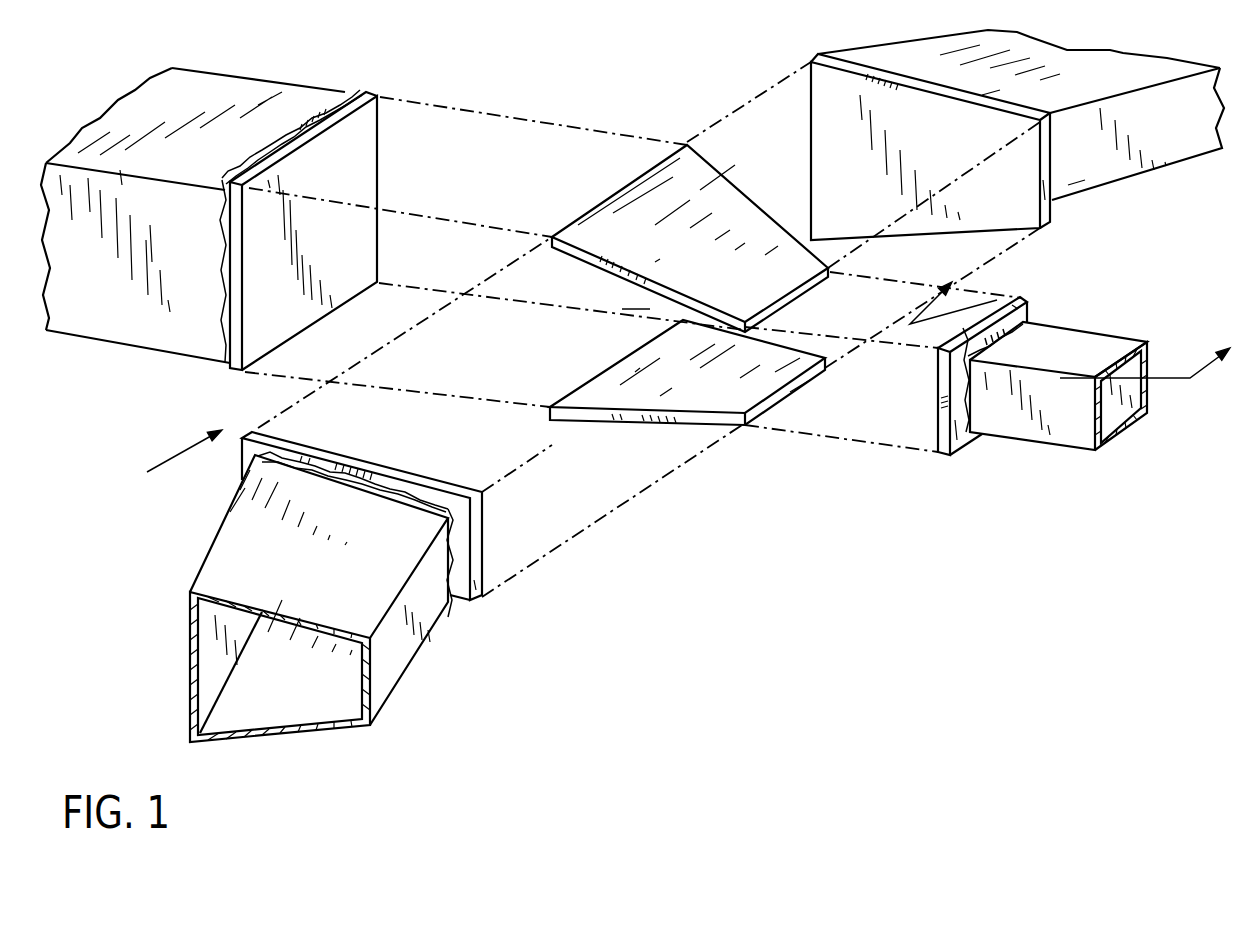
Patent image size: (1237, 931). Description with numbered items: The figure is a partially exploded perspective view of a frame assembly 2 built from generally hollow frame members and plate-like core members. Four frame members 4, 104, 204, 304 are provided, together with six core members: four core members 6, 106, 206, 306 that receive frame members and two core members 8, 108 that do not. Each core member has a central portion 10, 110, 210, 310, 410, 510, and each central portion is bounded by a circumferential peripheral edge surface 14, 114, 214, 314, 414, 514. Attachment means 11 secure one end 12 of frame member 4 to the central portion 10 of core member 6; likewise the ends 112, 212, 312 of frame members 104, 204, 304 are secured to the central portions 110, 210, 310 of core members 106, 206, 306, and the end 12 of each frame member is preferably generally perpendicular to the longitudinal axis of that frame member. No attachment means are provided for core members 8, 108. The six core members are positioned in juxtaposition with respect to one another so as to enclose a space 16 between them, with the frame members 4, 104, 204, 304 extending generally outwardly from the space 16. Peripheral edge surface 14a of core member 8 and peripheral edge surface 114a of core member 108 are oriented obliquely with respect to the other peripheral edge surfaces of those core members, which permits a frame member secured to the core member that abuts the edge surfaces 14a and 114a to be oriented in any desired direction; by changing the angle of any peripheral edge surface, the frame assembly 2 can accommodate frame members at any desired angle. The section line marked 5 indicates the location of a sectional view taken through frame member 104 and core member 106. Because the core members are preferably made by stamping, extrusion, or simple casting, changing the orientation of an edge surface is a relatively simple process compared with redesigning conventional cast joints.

The frame assembly 2 is at (175, 459).
The frame member 4 is at (1152, 173).
The section line 5- 5 is at (1070, 330).
The core member 6 is at (1048, 226).
The core member 8 is at (635, 207).
The central portion 10 is at (858, 102).
The attachment means 11 is at (222, 233).
The end 12 is at (1077, 190).
The peripheral edge surface 14 is at (990, 103).
The peripheral edge surface 14a is at (722, 177).
The space 16 is at (636, 298).
The frame member 104 is at (1097, 338).
The core member 106 is at (958, 388).
The core member 108 is at (787, 393).
The central portion 110 is at (963, 423).
The end 112 is at (987, 410).
The peripheral edge surface 114 is at (1025, 298).
The peripheral edge surface 114a is at (780, 345).
The frame member 204 is at (415, 628).
The core member 206 is at (482, 543).
The central portion 210 is at (480, 600).
The end 212 is at (308, 482).
The peripheral edge surface 214 is at (405, 467).
The frame member 304 is at (245, 95).
The core member 306 is at (237, 367).
The central portion 310 is at (322, 262).
The end 312 is at (85, 302).
The peripheral edge surface 314 is at (340, 118).
The central portion 410 is at (746, 213).
The peripheral edge surface 414 is at (618, 265).
The central portion 510 is at (698, 395).
The peripheral edge surface 514 is at (632, 423).